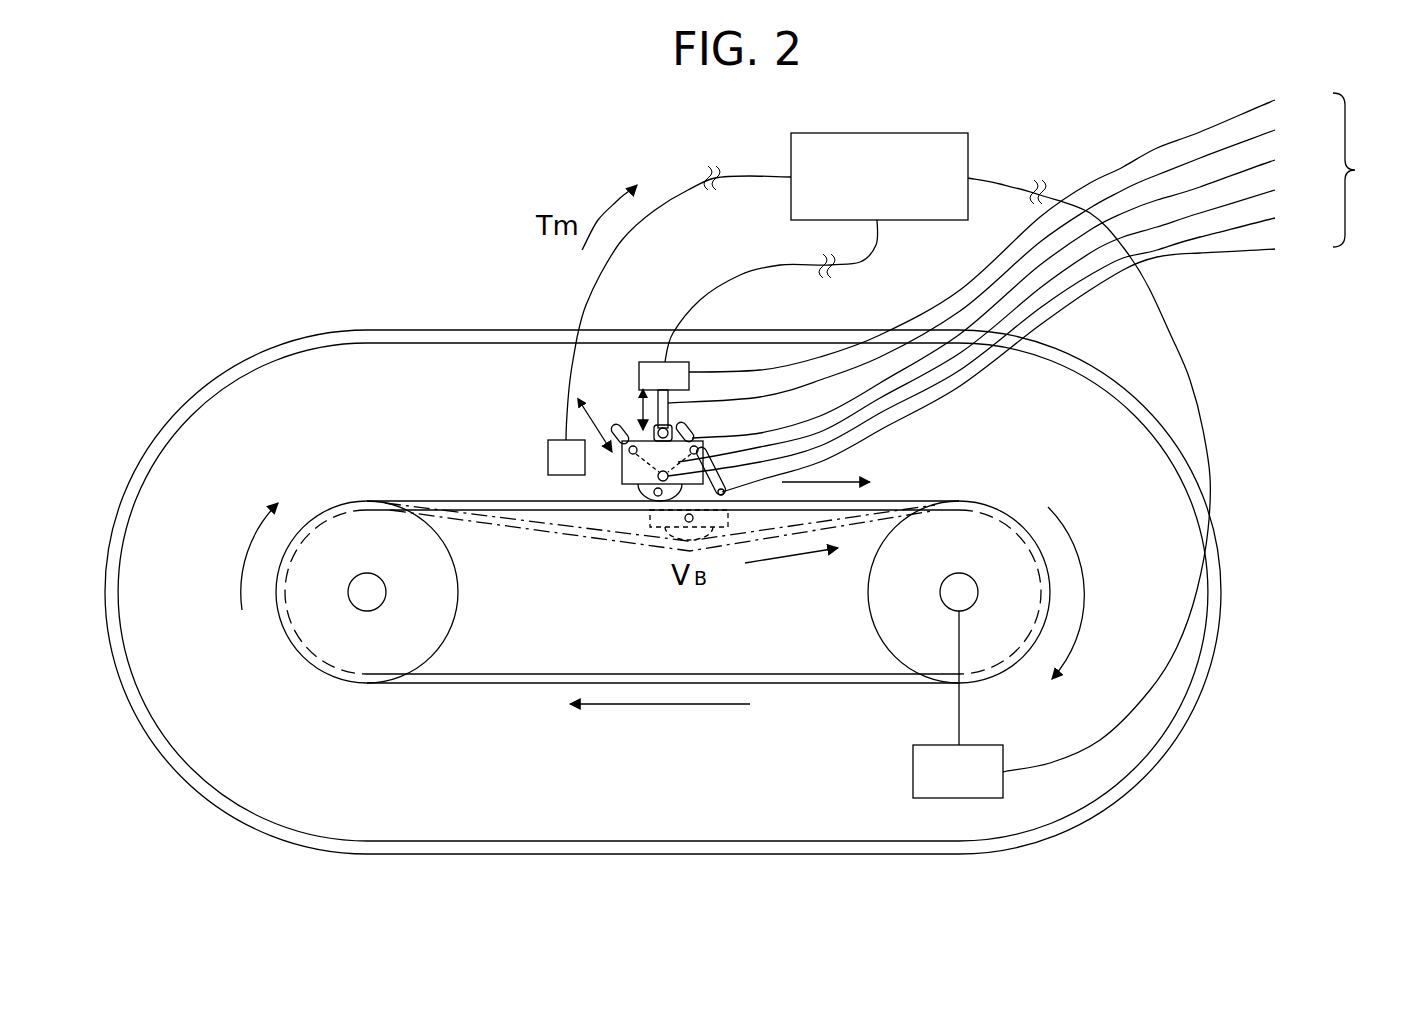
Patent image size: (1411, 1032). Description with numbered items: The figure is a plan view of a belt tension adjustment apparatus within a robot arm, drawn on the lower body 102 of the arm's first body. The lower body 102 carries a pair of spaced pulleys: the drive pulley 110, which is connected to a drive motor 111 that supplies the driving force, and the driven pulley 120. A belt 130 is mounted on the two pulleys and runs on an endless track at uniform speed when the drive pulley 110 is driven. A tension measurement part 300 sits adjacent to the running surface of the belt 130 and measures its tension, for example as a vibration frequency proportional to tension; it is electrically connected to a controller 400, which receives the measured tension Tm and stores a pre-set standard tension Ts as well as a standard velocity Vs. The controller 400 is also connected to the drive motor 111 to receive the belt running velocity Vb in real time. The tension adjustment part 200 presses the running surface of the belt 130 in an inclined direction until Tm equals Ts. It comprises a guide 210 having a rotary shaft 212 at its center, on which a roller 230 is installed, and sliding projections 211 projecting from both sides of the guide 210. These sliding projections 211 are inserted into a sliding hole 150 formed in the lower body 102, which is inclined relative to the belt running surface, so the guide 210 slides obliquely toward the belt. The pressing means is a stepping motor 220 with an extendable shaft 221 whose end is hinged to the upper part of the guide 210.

The lower body 102 is at (168, 418).
The drive pulley 110 is at (1018, 603).
The drive motor 111 is at (988, 785).
The driven pulley 120 is at (348, 643).
The belt 130 is at (525, 685).
The sliding hole 150 is at (612, 430).
The tension adjustment part 200 is at (1368, 170).
The guide 210 is at (1001, 318).
The sliding projections 211 is at (1008, 291).
The rotary shaft 212 is at (996, 339).
The stepping motor 220 is at (1006, 228).
The shaft 221 is at (996, 258).
The roller 230 is at (1023, 362).
The tension measurement part 300 is at (563, 455).
The controller 400 is at (867, 133).